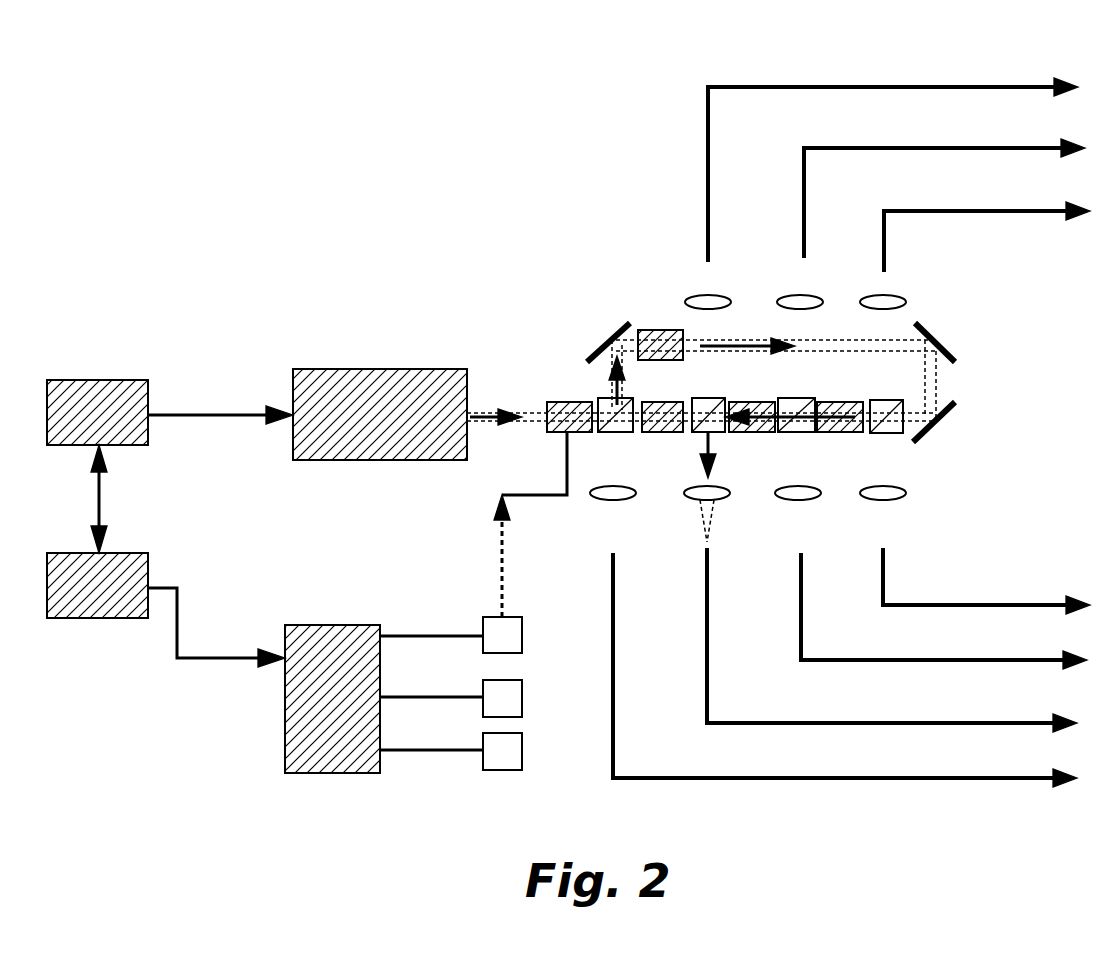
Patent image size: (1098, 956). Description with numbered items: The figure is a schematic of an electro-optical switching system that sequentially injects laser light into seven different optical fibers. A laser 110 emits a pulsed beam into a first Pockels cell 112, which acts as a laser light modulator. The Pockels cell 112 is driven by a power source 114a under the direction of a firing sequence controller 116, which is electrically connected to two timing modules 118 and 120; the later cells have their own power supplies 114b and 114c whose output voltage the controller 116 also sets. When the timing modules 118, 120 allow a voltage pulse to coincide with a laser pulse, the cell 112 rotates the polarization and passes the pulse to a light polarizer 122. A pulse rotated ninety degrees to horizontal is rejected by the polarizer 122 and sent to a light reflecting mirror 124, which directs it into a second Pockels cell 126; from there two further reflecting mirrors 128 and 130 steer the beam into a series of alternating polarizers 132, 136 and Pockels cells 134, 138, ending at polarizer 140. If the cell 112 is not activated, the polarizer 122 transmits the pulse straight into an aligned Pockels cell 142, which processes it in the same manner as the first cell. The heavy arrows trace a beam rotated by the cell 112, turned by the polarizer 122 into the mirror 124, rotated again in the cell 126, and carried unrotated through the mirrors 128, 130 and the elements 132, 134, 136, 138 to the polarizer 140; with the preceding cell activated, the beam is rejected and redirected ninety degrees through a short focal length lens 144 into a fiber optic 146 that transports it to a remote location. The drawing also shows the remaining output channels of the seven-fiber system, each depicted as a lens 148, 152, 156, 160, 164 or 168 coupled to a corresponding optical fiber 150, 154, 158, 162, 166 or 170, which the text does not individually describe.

The laser 110 is at (385, 369).
The first Pockels cell 112 is at (557, 400).
The power source 114a is at (488, 574).
The power supply 114b is at (488, 698).
The power supply 114c is at (487, 753).
The firing sequence controller 116 is at (345, 625).
The timing module 118 is at (105, 620).
The timing module 120 is at (105, 380).
The light polarizer 122 is at (618, 432).
The light reflecting mirror 124 is at (604, 340).
The second Pockels cell 126 is at (668, 330).
The reflecting mirror 128 is at (940, 340).
The reflecting mirror 130 is at (936, 422).
The polarizer 132 is at (893, 401).
The Pockels cell 134 is at (843, 432).
The polarizer 136 is at (803, 401).
The Pockels cell 138 is at (754, 432).
The polarizer 140 is at (708, 401).
The Pockels cell 142 is at (669, 434).
The short focal length lens 144 is at (730, 495).
The fiber optic 146 is at (708, 710).
The lens 148 is at (821, 495).
The optical fiber 150 is at (802, 652).
The lens 152 is at (906, 495).
The optical fiber 154 is at (884, 604).
The lens 156 is at (878, 301).
The optical fiber 158 is at (977, 211).
The lens 160 is at (779, 301).
The optical fiber 162 is at (883, 148).
The lens 164 is at (688, 301).
The optical fiber 166 is at (773, 87).
The lens 168 is at (636, 495).
The optical fiber 170 is at (614, 735).